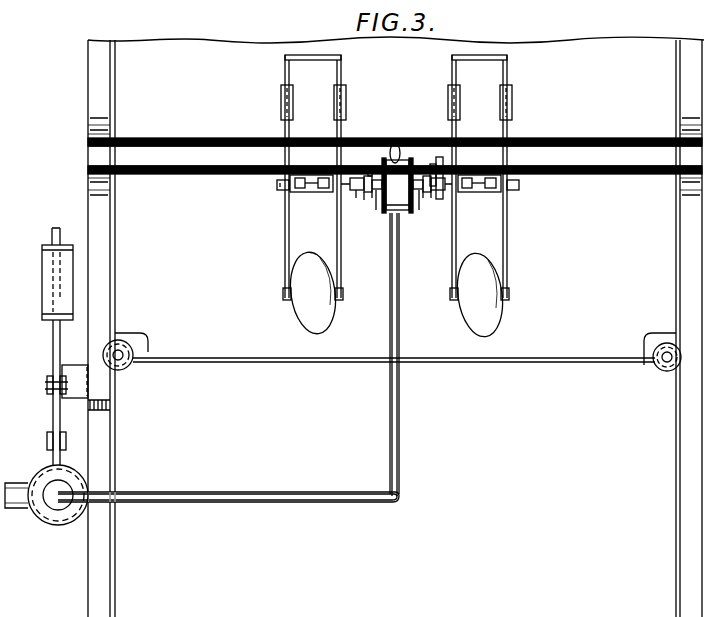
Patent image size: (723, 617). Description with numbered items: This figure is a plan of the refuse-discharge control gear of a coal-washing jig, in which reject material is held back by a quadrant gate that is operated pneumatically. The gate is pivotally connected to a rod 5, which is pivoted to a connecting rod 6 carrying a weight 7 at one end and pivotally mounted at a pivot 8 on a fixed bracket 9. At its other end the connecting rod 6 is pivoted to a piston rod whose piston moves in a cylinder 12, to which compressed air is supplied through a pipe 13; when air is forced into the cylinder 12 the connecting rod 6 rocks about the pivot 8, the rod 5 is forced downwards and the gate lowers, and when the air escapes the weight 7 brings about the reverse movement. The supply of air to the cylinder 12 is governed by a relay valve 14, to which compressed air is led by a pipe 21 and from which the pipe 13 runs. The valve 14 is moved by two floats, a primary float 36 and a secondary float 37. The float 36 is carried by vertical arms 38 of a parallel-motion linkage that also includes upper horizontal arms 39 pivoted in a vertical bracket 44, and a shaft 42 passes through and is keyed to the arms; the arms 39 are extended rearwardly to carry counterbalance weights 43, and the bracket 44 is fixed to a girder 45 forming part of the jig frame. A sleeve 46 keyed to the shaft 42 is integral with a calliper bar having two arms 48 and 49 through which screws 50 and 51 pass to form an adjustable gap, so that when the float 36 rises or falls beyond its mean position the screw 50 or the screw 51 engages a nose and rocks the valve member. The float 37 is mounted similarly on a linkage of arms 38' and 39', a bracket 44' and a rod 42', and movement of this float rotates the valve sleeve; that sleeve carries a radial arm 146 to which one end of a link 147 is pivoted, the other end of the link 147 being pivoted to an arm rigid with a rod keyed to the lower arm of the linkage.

The rod 5 is at (47, 441).
The connecting rod 6 is at (53, 410).
The weight 7 is at (42, 284).
The pivot 8 is at (47, 383).
The fixed bracket 9 is at (82, 366).
The cylinder 12 is at (58, 525).
The pipe 13 is at (140, 492).
The relay valve 14 is at (413, 210).
The pipe 21 is at (398, 142).
The primary float 36 is at (304, 312).
The secondary float 37 is at (474, 314).
The vertical arms 38 is at (305, 274).
The vertical arms 38' is at (483, 268).
The upper horizontal arms 39 is at (295, 176).
The upper horizontal arms 39' is at (500, 176).
The shaft 42 is at (311, 198).
The rod 42' is at (479, 198).
The counterbalance weights 43 is at (334, 100).
The vertical bracket 44 is at (269, 190).
The bracket 44' is at (529, 190).
The girder 45 is at (636, 160).
The sleeve 46 is at (360, 178).
The arm 48 is at (370, 172).
The arm 49 is at (365, 200).
The screw 50 is at (377, 210).
The screw 51 is at (362, 196).
The radial arm 146 is at (445, 166).
The link 147 is at (444, 172).